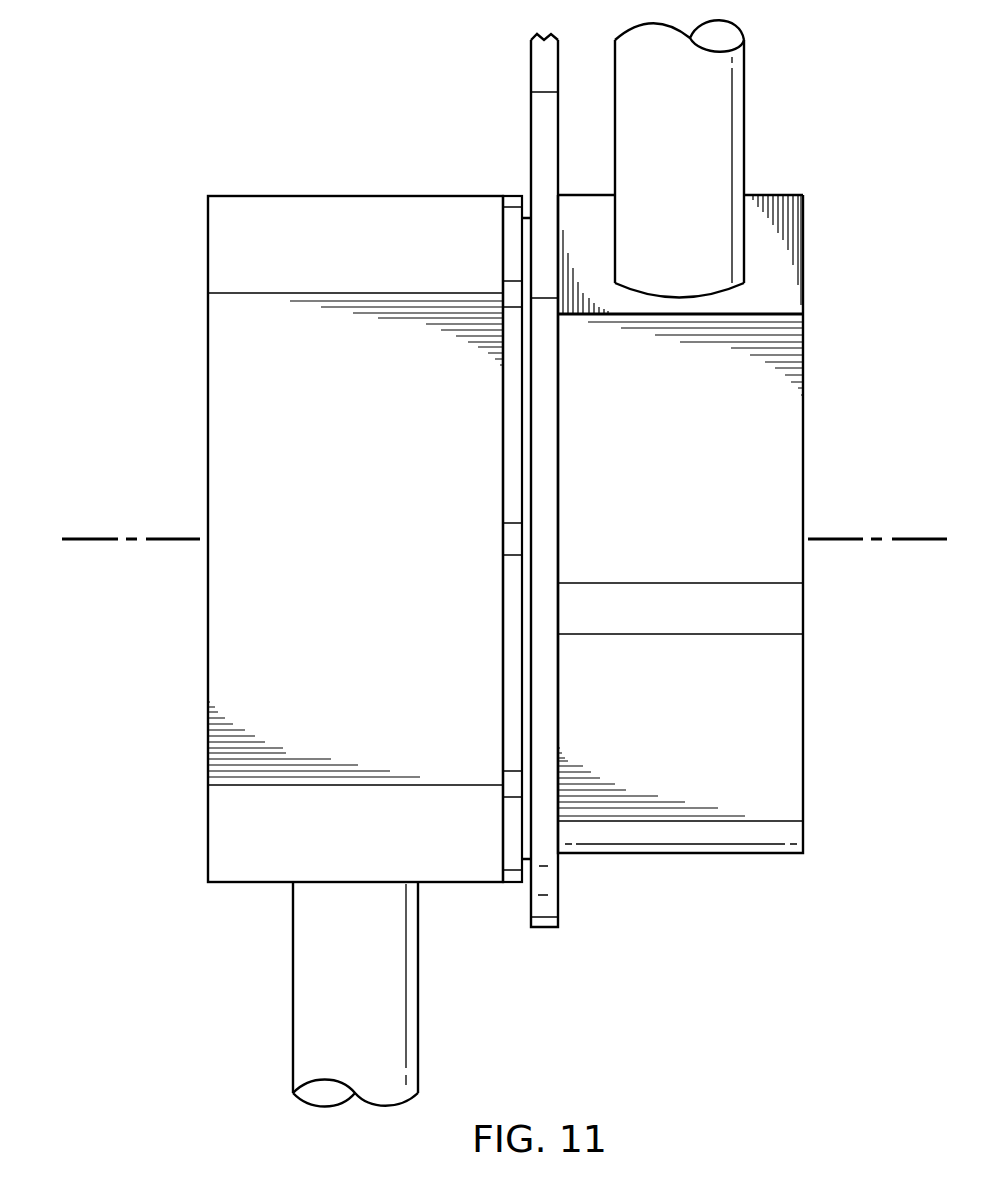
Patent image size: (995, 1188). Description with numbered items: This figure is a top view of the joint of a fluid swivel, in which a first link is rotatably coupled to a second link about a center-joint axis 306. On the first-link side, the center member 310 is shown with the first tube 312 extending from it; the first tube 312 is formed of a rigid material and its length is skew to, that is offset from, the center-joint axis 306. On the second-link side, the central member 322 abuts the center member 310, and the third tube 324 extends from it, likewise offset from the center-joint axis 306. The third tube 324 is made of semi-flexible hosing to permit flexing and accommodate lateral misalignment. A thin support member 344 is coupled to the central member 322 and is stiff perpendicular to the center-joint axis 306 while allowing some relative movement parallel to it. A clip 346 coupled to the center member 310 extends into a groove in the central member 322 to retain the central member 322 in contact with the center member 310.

The center-joint axis 306 is at (88, 538).
The center member 310 is at (283, 195).
The first tube 312 is at (292, 980).
The central member 322 is at (722, 855).
The third tube 324 is at (745, 108).
The support member 344 is at (543, 928).
The clip 346 is at (513, 195).